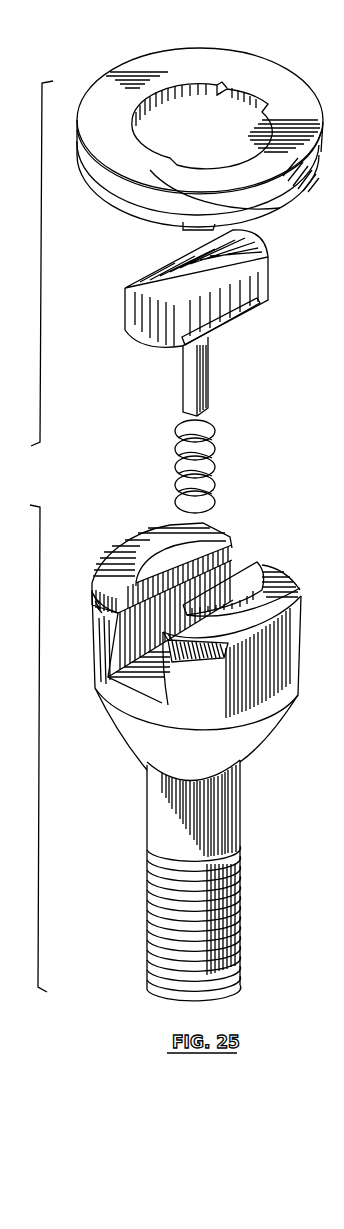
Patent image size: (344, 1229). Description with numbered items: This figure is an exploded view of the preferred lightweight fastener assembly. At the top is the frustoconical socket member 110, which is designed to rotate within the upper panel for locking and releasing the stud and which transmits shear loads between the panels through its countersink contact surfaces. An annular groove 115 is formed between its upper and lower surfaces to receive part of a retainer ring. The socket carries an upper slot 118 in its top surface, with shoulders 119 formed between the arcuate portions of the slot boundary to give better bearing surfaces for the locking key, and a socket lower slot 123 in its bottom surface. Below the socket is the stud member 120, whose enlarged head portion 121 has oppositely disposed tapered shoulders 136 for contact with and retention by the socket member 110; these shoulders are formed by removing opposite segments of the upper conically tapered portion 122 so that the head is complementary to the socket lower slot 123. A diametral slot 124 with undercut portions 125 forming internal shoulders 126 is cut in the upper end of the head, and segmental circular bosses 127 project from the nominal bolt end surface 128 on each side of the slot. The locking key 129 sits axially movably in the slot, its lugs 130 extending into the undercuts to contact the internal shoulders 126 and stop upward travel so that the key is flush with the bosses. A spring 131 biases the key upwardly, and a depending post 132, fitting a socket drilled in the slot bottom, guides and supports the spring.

The socket member 110 is at (142, 65).
The annular groove 115 is at (258, 207).
The upper slot 118 is at (170, 152).
The shoulders 119 is at (229, 87).
The stud member 120 is at (240, 788).
The head portion 121 is at (297, 638).
The upper conically tapered portion 122 is at (92, 606).
The socket lower slot 123 is at (180, 224).
The diametral slot 124 is at (137, 680).
The undercut portions 125 is at (170, 690).
The internal shoulders 126 is at (115, 620).
The segmental circular bosses 127 is at (158, 551).
The nominal bolt end surface 128 is at (273, 577).
The locking key 129 is at (148, 325).
The lugs 130 is at (238, 315).
The spring 131 is at (208, 464).
The depending post 132 is at (208, 381).
The tapered shoulders 136 is at (238, 658).